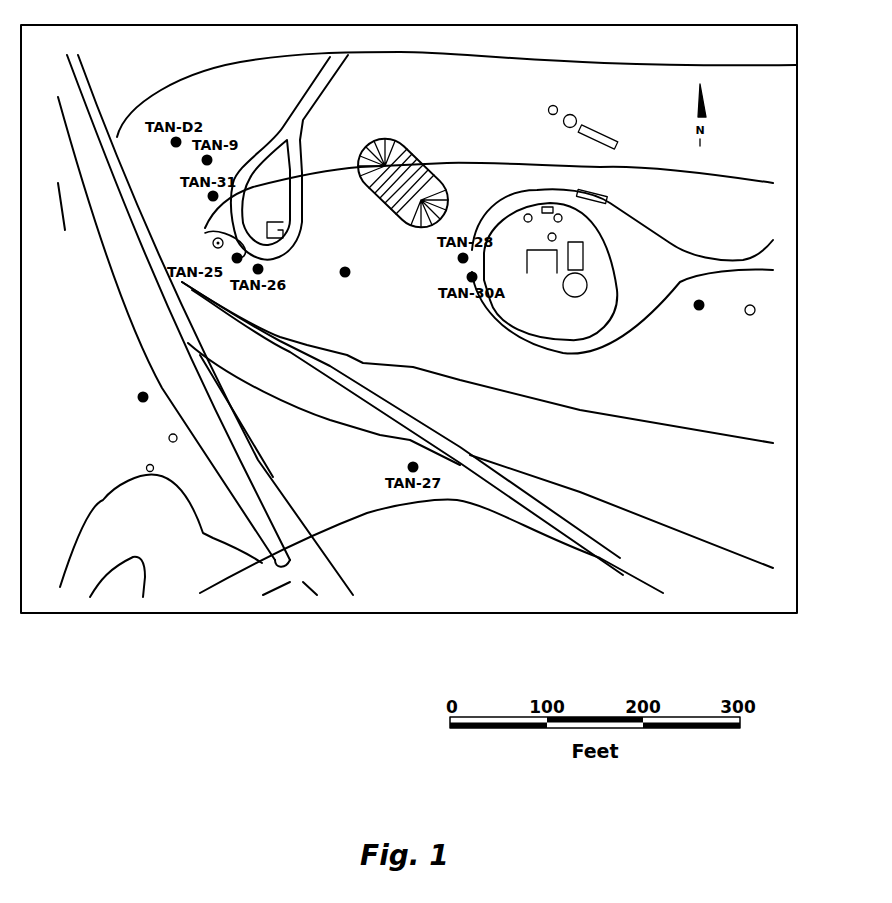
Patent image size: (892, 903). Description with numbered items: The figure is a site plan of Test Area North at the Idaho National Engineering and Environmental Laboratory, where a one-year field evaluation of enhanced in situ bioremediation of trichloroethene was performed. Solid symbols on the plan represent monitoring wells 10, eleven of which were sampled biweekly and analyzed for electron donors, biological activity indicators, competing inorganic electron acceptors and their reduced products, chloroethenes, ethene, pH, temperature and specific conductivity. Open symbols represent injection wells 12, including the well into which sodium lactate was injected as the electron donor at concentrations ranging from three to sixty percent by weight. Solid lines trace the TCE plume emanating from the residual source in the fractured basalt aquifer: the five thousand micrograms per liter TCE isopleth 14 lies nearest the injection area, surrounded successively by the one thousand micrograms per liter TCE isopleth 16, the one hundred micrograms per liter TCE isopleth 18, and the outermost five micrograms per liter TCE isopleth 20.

The monitoring well 10 is at (345, 272).
The injection well 12 is at (213, 245).
The 5,000 µg/L TCE isopleth 14 is at (218, 236).
The 1,000 µg/L TCE isopleth 16 is at (652, 422).
The 100 µg/L TCE isopleth 18 is at (640, 513).
The 5 µg/L TCE isopleth 20 is at (363, 517).